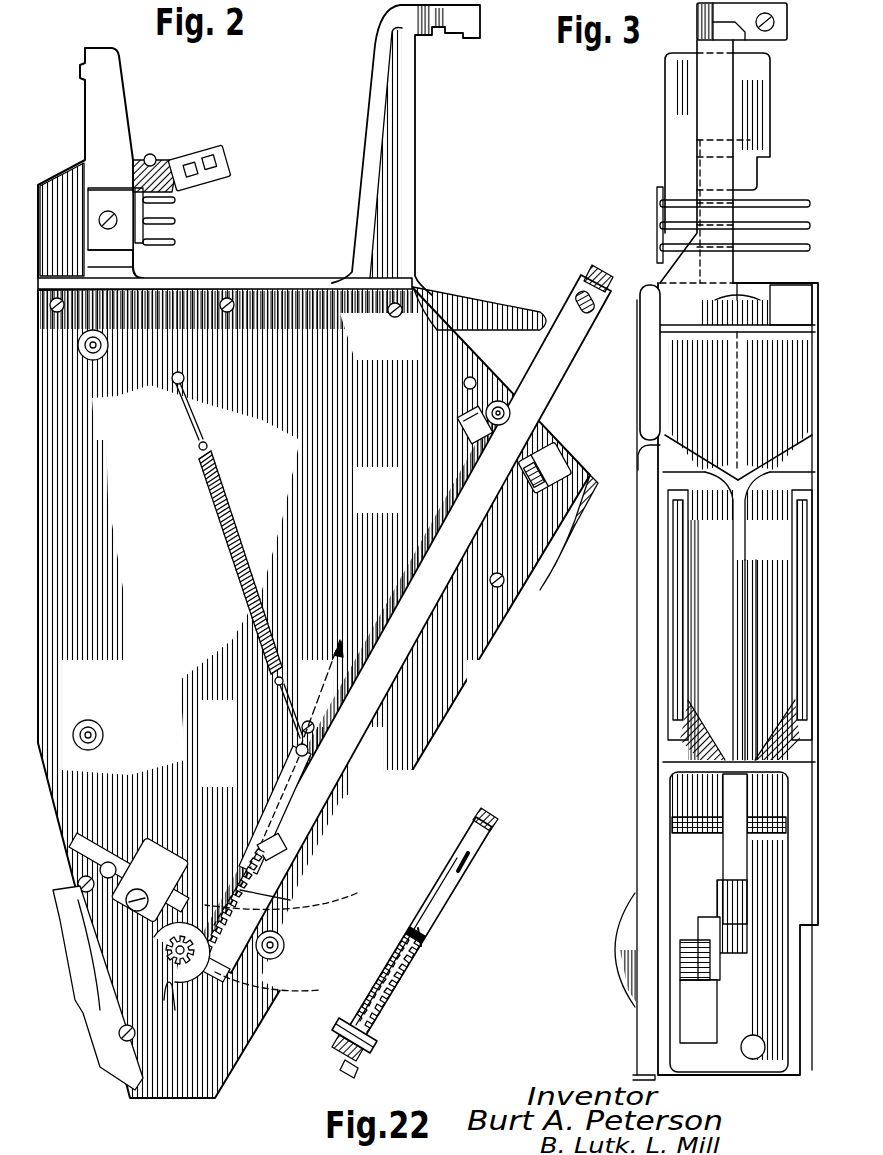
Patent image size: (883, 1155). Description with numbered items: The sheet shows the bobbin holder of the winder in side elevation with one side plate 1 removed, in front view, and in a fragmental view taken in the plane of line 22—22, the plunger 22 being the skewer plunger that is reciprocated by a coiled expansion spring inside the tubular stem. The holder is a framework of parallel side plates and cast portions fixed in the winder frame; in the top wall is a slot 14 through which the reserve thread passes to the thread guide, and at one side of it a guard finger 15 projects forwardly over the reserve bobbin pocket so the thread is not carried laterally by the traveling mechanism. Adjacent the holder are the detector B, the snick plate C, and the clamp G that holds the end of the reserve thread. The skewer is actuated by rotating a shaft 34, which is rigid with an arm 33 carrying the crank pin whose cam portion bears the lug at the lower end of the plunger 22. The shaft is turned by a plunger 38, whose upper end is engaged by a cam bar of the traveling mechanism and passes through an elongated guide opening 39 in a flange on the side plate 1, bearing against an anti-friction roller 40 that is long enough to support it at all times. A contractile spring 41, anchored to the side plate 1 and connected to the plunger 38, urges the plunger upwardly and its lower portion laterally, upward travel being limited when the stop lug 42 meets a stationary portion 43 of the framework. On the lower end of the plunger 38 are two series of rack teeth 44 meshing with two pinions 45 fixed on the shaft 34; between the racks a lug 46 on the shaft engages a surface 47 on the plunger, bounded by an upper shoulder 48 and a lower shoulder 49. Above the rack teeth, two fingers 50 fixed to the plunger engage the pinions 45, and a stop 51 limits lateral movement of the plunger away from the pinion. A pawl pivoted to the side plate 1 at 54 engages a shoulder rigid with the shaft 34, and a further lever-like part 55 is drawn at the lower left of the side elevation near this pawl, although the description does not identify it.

In FIG. 2, the side plate 1 is at (393, 793).
In FIG. 3, the slot 14 is at (745, 300).
In FIG. 2, the guard finger 15 is at (470, 302).
In FIG. 3, the guard finger 15 is at (793, 305).
In FIG. 2, the plunger 22 is at (329, 693).
In FIG. 3, the arm 33 is at (702, 918).
In FIG. 2, the shaft 34 is at (172, 1008).
In FIG. 22, the shaft 34 is at (378, 1060).
In FIG. 2, the plunger 38 is at (565, 368).
In FIG. 3, the plunger 38 is at (645, 365).
In FIG. 22, the plunger 38 is at (495, 826).
In FIG. 3, the guide opening 39 is at (655, 443).
In FIG. 2, the anti-friction roller 40 is at (535, 465).
In FIG. 2, the contractile spring 41 is at (240, 545).
In FIG. 2, the stop lug 42 is at (465, 418).
In FIG. 2, the stationary portion 43 is at (495, 398).
In FIG. 2, the rack teeth 44 is at (236, 905).
In FIG. 22, the rack teeth 44 is at (376, 995).
In FIG. 2, the pinions 45 is at (168, 955).
In FIG. 22, the pinions 45 is at (350, 1078).
In FIG. 2, the lug 46 is at (243, 970).
In FIG. 22, the lug 46 is at (345, 1074).
In FIG. 2, the surface 47 is at (288, 894).
In FIG. 22, the surface 47 is at (400, 978).
In FIG. 2, the shoulder 48 is at (262, 855).
In FIG. 22, the shoulder 48 is at (412, 940).
In FIG. 2, the shoulder 49 is at (294, 892).
In FIG. 2, the fingers 50 is at (268, 832).
In FIG. 22, the fingers 50 is at (412, 934).
In FIG. 2, the stop 51 is at (283, 933).
In FIG. 2, the pivot 54 is at (110, 868).
In FIG. 2, the lever 55 is at (135, 1068).
In FIG. 2, the detector B is at (164, 216).
In FIG. 3, the detector B is at (733, 222).
In FIG. 2, the snick plate C is at (191, 168).
In FIG. 2, the clamp G is at (406, 150).
In FIG. 3, the clamp G is at (729, 21).